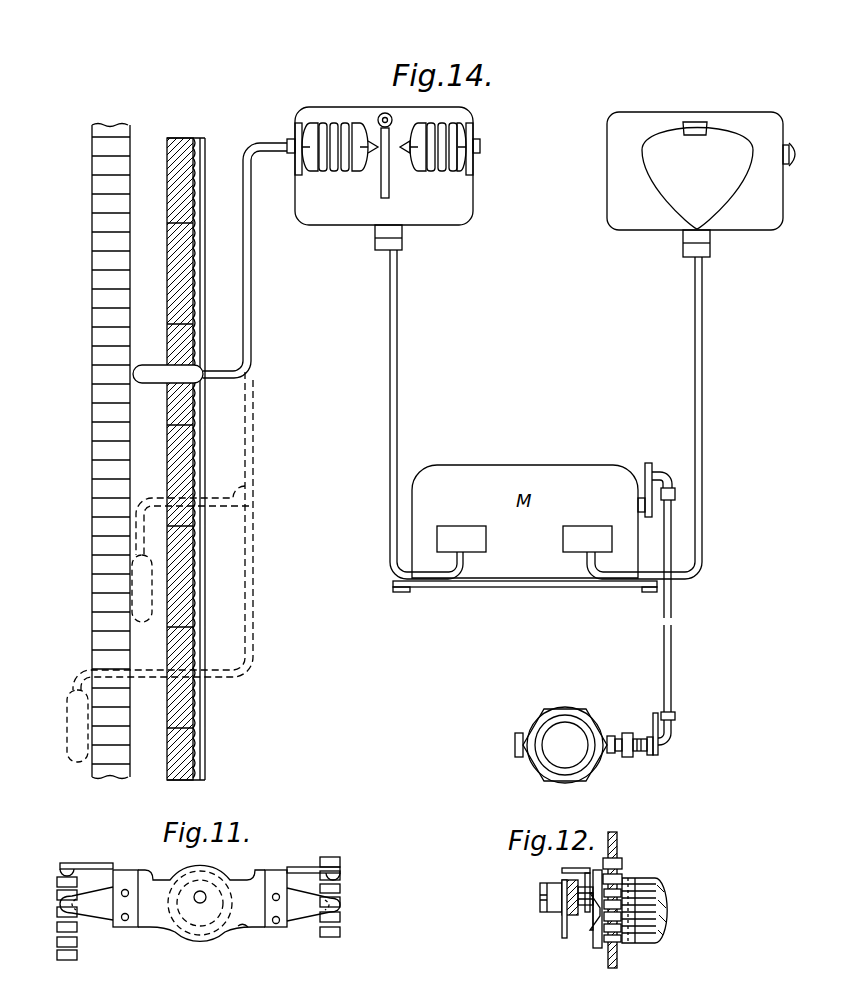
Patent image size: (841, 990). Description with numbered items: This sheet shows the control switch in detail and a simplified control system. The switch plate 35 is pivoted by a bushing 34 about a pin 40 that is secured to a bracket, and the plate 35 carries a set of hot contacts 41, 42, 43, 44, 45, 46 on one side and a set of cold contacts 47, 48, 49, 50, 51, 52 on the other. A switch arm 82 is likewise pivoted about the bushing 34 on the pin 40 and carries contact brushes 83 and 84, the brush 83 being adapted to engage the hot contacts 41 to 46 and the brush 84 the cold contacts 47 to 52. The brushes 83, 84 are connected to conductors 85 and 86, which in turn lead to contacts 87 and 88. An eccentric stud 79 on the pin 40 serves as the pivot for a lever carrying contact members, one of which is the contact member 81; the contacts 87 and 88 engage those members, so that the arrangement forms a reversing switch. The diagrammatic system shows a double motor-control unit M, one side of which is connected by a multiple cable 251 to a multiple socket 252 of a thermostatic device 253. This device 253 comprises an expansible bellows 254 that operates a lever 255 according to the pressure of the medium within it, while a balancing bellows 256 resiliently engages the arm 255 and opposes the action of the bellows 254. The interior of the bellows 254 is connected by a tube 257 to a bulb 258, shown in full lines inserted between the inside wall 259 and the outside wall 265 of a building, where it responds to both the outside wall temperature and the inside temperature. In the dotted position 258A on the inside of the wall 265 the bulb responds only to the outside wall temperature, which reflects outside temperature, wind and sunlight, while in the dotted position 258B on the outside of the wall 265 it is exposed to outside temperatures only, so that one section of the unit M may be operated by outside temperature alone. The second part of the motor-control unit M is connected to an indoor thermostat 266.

In FIG. 14, the multiple cable 251 is at (397, 385).
In FIG. 14, the multiple socket 252 is at (402, 232).
In FIG. 14, the thermostatic device 253 is at (462, 212).
In FIG. 14, the expansible bellows 254 is at (344, 170).
In FIG. 14, the lever 255 is at (382, 182).
In FIG. 14, the balancing bellows 256 is at (426, 170).
In FIG. 14, the tube 257 is at (251, 302).
In FIG. 14, the bulb 258 is at (160, 367).
In FIG. 14, the bulb position 258A is at (138, 582).
In FIG. 14, the bulb position 258B is at (66, 750).
In FIG. 14, the inside wall 259 is at (192, 300).
In FIG. 14, the outside wall 265 is at (106, 342).
In FIG. 14, the indoor thermostat 266 is at (650, 224).
In FIG. 11, the bushing 34 is at (180, 930).
In FIG. 12, the bushing 34 is at (630, 943).
In FIG. 12, the switch plate 35 is at (617, 843).
In FIG. 11, the pin 40 is at (200, 941).
In FIG. 12, the pin 40 is at (655, 921).
In FIG. 11, the hot contact 41 is at (57, 881).
In FIG. 11, the hot contact 42 is at (57, 895).
In FIG. 11, the hot contact 43 is at (57, 911).
In FIG. 11, the hot contact 44 is at (57, 927).
In FIG. 11, the hot contact 45 is at (57, 942).
In FIG. 11, the hot contact 46 is at (57, 955).
In FIG. 11, the cold contact 47 is at (332, 931).
In FIG. 12, the cold contact 47 is at (650, 940).
In FIG. 11, the cold contact 48 is at (340, 917).
In FIG. 12, the cold contact 48 is at (660, 930).
In FIG. 11, the cold contact 49 is at (340, 902).
In FIG. 12, the cold contact 49 is at (660, 904).
In FIG. 11, the cold contact 50 is at (340, 889).
In FIG. 12, the cold contact 50 is at (660, 892).
In FIG. 11, the cold contact 51 is at (340, 876).
In FIG. 12, the cold contact 51 is at (622, 879).
In FIG. 11, the cold contact 52 is at (340, 863).
In FIG. 12, the cold contact 52 is at (622, 864).
In FIG. 11, the eccentric stud 79 is at (203, 893).
In FIG. 12, the eccentric stud 79 is at (540, 898).
In FIG. 12, the contact member 81 is at (562, 930).
In FIG. 11, the switch arm 82 is at (243, 929).
In FIG. 12, the switch arm 82 is at (598, 949).
In FIG. 11, the contact brush 83 is at (100, 919).
In FIG. 11, the contact brush 84 is at (306, 916).
In FIG. 12, the contact brush 84 is at (596, 929).
In FIG. 11, the conductor 85 is at (125, 878).
In FIG. 11, the conductor 86 is at (275, 878).
In FIG. 12, the conductor 86 is at (576, 918).
In FIG. 11, the contact 87 is at (72, 864).
In FIG. 11, the contact 88 is at (333, 866).
In FIG. 12, the contact 88 is at (562, 870).